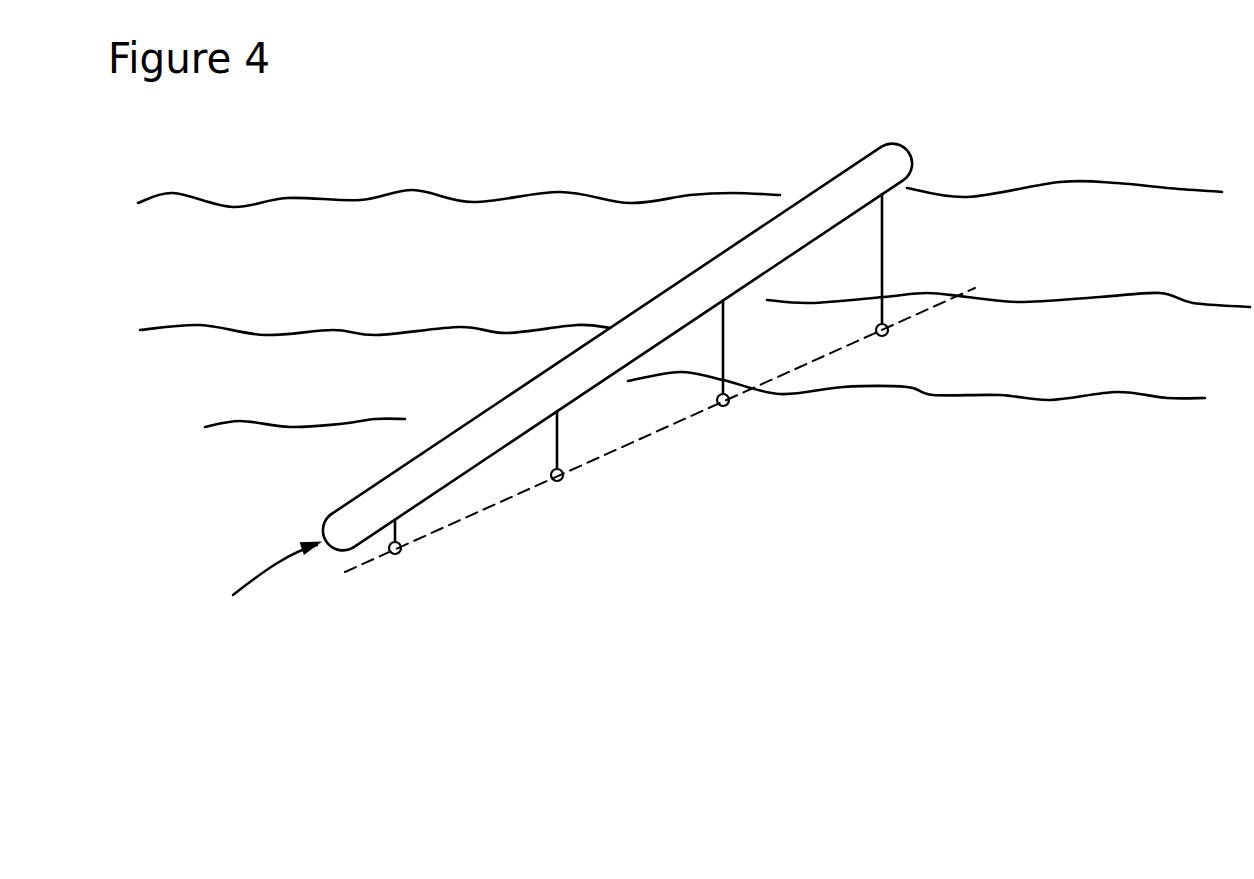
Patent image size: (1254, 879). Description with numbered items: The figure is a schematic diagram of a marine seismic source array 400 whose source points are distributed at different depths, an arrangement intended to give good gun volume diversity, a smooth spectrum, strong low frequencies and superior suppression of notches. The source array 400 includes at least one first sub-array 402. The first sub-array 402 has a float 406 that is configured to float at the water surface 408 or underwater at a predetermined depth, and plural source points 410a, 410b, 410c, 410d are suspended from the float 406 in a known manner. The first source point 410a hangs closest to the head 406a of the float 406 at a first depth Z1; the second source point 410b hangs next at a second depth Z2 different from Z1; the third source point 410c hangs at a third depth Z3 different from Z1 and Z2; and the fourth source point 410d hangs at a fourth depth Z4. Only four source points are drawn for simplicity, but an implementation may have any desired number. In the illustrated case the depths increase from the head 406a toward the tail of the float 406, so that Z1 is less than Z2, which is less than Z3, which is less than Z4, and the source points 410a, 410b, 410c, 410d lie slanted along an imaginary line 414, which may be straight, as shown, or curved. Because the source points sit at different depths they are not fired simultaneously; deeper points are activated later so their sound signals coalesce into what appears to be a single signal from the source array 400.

The source array 400 is at (632, 128).
The first sub-array 402 is at (252, 583).
The float 406 is at (528, 392).
The head of the float 406a is at (336, 530).
The water surface 408 is at (362, 220).
The first source point 410a is at (393, 554).
The second source point 410b is at (557, 482).
The third source point 410c is at (730, 405).
The fourth source point 410d is at (886, 336).
The imaginary line 414 is at (677, 422).
The first depth Z1 is at (396, 532).
The second depth Z2 is at (557, 440).
The third depth Z3 is at (724, 342).
The fourth depth Z4 is at (883, 245).